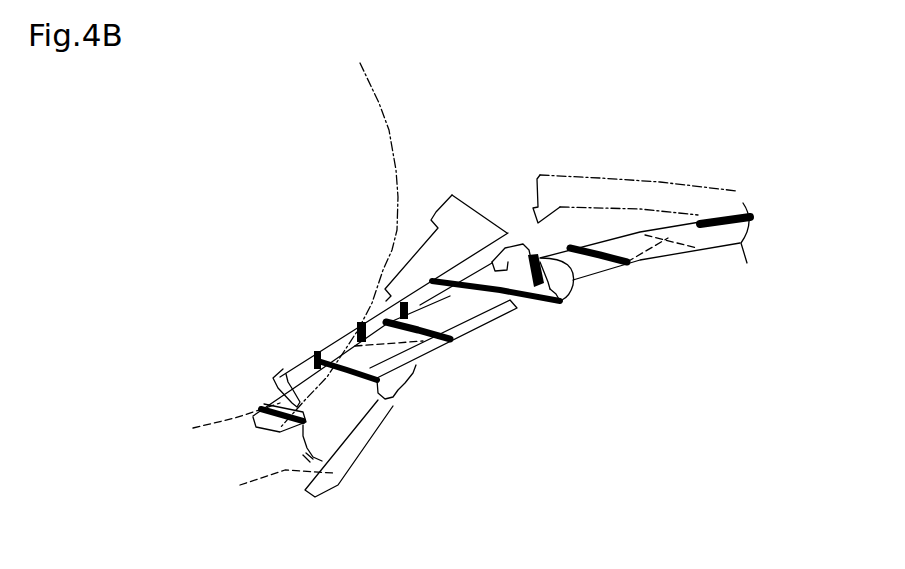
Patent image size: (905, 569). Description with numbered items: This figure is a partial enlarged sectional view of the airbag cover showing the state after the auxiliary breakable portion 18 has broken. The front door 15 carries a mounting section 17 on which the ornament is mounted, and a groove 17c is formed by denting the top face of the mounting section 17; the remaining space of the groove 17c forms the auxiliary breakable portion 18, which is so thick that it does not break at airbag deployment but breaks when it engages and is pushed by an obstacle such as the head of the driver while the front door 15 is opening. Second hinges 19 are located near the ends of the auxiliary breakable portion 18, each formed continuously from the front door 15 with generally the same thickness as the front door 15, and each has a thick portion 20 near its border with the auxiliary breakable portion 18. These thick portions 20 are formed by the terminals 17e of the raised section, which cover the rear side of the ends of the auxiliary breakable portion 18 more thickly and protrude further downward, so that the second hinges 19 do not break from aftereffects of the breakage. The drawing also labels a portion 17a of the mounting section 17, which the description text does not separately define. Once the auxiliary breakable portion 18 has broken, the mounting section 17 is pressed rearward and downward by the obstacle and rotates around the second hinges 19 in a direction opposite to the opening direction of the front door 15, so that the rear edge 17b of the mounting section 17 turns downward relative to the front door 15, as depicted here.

The front door 15 is at (641, 226).
The mounting section 17 is at (376, 359).
The tab of bracket 17a is at (482, 276).
The rear edge 17b is at (297, 435).
The groove 17c is at (603, 304).
The terminals of the raised section 17e is at (435, 441).
The auxiliary breakable portion 18 is at (603, 304).
The second hinges 19 is at (350, 458).
The thick portion 20 is at (435, 441).